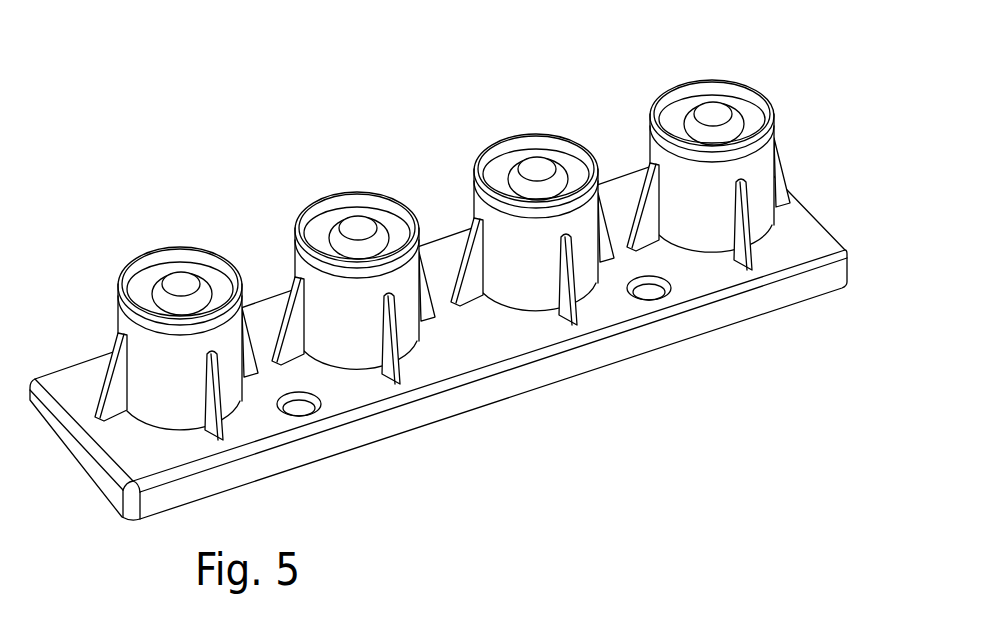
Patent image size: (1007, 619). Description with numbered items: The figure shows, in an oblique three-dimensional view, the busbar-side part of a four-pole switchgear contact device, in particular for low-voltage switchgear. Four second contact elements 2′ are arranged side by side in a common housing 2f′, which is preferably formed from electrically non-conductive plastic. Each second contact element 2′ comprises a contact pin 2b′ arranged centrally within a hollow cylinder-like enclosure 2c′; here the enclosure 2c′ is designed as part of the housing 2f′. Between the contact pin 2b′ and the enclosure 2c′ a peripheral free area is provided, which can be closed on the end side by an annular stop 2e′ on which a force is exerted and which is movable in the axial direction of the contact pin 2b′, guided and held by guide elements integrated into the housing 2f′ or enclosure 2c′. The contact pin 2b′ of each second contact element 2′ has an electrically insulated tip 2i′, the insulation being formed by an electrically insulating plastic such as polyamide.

The second contact element 2′ is at (117, 320).
The contact pin 2b′ is at (175, 307).
The enclosure 2c′ is at (180, 249).
The annular stop 2e′ is at (148, 282).
The electrically insulated tip 2i′ is at (365, 227).
The housing 2f′ is at (797, 227).